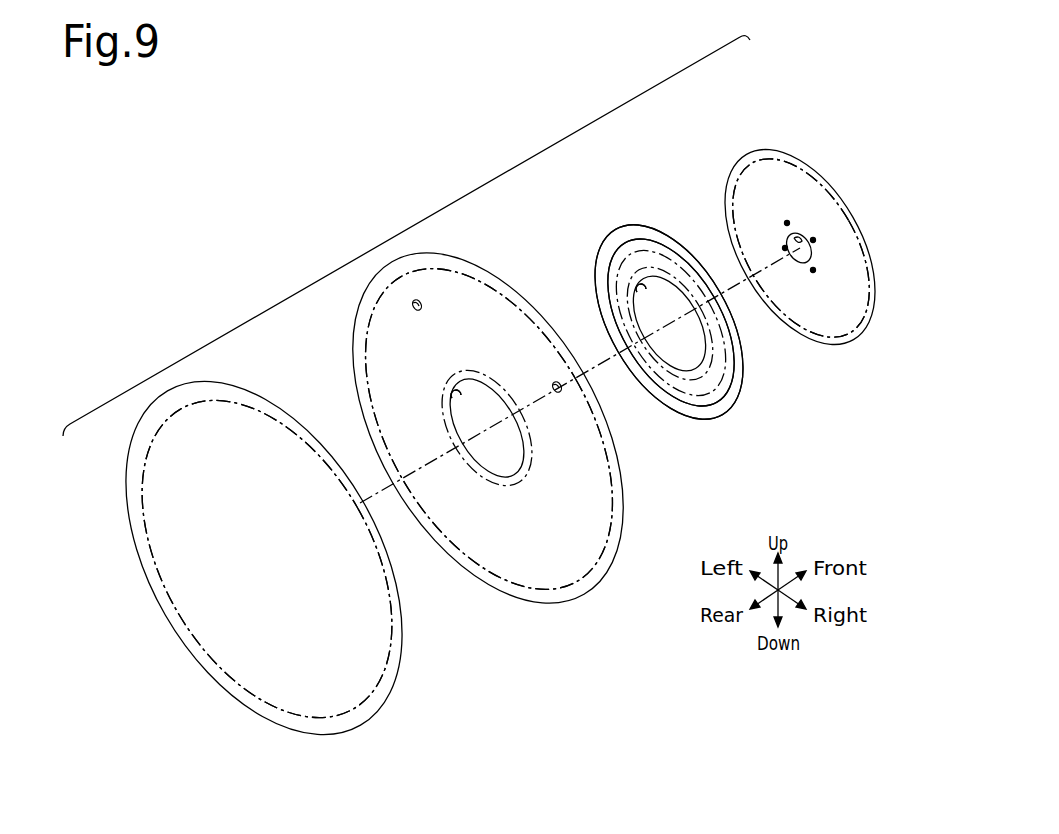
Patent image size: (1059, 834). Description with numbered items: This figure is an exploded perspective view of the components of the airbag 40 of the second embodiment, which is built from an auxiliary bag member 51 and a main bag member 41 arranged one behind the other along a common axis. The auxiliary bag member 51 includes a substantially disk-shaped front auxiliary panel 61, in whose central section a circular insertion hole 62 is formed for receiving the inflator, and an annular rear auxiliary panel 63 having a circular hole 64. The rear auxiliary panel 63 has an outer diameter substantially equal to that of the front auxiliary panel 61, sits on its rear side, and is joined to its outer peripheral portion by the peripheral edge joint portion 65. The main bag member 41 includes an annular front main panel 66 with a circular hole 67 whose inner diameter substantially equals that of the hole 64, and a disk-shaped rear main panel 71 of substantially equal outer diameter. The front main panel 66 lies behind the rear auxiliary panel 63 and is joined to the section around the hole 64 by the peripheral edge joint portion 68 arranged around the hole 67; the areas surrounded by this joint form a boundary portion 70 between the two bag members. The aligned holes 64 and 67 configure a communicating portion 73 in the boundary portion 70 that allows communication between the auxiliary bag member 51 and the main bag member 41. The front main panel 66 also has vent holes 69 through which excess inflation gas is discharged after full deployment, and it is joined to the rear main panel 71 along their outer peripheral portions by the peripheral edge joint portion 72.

The airbag 40 is at (413, 227).
The main bag member 41 is at (374, 494).
The auxiliary bag member 51 is at (735, 284).
The front auxiliary panel 61 is at (765, 398).
The insertion hole 62 is at (794, 227).
The rear auxiliary panel 63 is at (745, 372).
The hole 64 is at (640, 290).
The peripheral edge joint portion 65 is at (727, 193).
The front main panel 66 is at (420, 641).
The hole 67 is at (455, 393).
The peripheral edge joint portion 68 is at (607, 437).
The vent holes 69 is at (415, 311).
The boundary portion 70 is at (665, 448).
The rear main panel 71 is at (400, 622).
The peripheral edge joint portion 72 is at (360, 363).
The communicating portion 73 is at (515, 347).